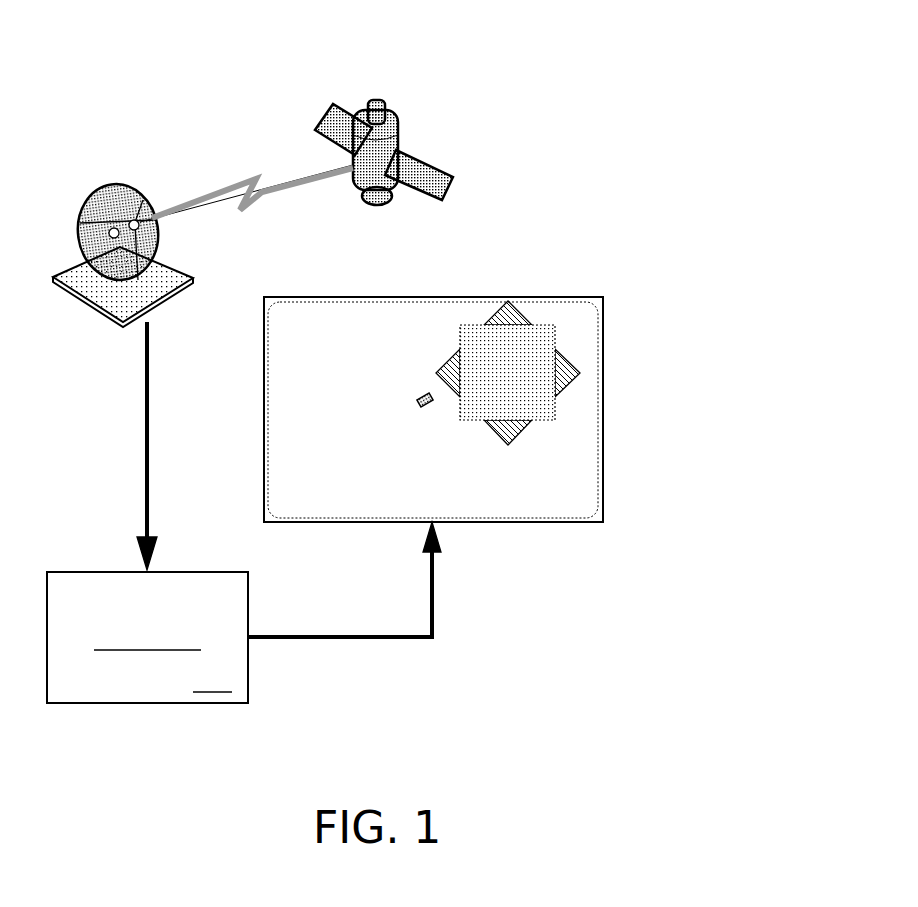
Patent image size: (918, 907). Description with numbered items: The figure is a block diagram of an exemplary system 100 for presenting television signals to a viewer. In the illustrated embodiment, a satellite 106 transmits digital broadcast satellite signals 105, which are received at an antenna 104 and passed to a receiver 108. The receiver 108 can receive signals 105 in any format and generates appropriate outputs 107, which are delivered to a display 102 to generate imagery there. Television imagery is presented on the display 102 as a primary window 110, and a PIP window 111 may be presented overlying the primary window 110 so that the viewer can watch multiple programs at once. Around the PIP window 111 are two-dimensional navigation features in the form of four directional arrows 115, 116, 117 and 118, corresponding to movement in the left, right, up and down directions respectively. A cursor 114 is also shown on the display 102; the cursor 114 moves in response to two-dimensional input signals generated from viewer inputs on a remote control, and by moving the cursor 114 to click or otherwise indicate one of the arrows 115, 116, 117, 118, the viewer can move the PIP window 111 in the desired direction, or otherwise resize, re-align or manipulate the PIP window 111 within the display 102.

The system 100 is at (494, 48).
The display 102 is at (433, 440).
The antenna 104 is at (155, 306).
The signals 105 is at (151, 443).
The satellite 106 is at (392, 138).
The outputs 107 is at (435, 597).
The receiver 108 is at (147, 637).
The primary window 110 is at (321, 335).
The PIP window 111 is at (540, 401).
The cursor 114 is at (430, 410).
The left directional arrow 115 is at (438, 372).
The right directional arrow 116 is at (575, 378).
The up directional arrow 117 is at (493, 310).
The down directional arrow 118 is at (508, 432).